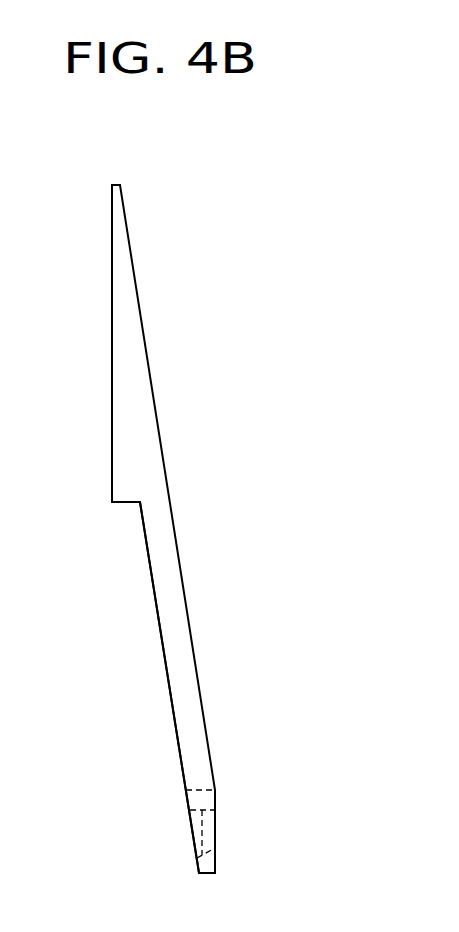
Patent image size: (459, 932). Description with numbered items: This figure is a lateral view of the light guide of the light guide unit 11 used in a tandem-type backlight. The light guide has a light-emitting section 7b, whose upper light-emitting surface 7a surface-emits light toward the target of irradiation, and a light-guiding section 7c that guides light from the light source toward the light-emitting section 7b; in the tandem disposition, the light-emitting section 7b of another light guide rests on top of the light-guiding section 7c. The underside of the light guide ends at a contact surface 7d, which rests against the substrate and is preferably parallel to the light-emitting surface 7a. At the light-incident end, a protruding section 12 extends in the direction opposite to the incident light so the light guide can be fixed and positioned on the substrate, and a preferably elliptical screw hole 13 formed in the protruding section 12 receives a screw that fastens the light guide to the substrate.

The light guide unit 11 is at (268, 208).
The light-emitting surface 7a is at (112, 282).
The light-emitting section 7b is at (118, 390).
The light-guiding section 7c is at (163, 618).
The contact surface 7d is at (216, 868).
The protruding section 12 is at (213, 797).
The screw hole 13 is at (215, 838).